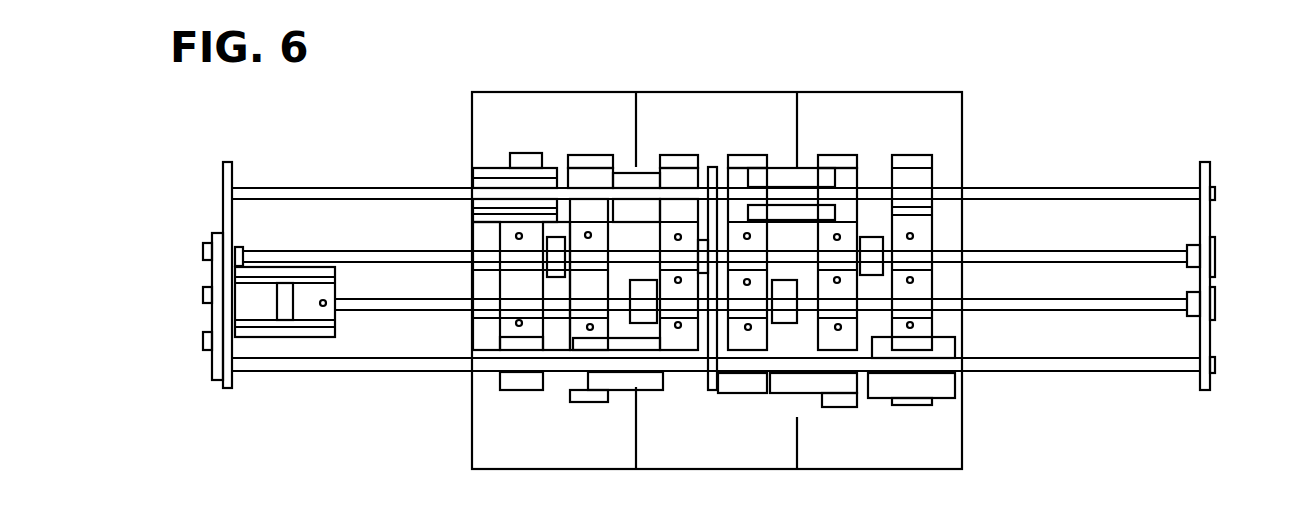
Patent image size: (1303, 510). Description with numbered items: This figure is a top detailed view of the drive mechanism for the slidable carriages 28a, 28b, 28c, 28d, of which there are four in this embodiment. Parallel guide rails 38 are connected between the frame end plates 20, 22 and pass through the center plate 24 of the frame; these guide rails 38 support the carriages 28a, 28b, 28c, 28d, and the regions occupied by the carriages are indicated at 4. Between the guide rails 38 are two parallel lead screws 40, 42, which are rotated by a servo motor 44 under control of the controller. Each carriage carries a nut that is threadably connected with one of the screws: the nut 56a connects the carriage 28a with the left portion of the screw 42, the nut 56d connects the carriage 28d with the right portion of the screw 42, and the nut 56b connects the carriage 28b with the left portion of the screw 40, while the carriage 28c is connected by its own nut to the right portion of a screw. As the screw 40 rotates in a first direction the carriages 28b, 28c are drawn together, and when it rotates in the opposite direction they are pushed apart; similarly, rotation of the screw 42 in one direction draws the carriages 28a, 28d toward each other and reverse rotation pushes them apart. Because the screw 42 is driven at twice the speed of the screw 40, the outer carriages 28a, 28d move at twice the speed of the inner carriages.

The molding station / frame section 4 is at (530, 105).
The frame end plate 20 is at (230, 170).
The frame end plate 22 is at (1212, 177).
The center plate 24 is at (708, 167).
The carriage 28a is at (548, 387).
The carriage 28b is at (612, 390).
The carriage 28c is at (808, 393).
The carriage 28d is at (927, 405).
The guide rails 38 is at (373, 187).
The lead screw 40 is at (363, 300).
The lead screw 42 is at (395, 257).
The servo motor 44 is at (285, 338).
The nut 56a is at (557, 247).
The nut 56b is at (648, 315).
The nut 56d is at (872, 248).